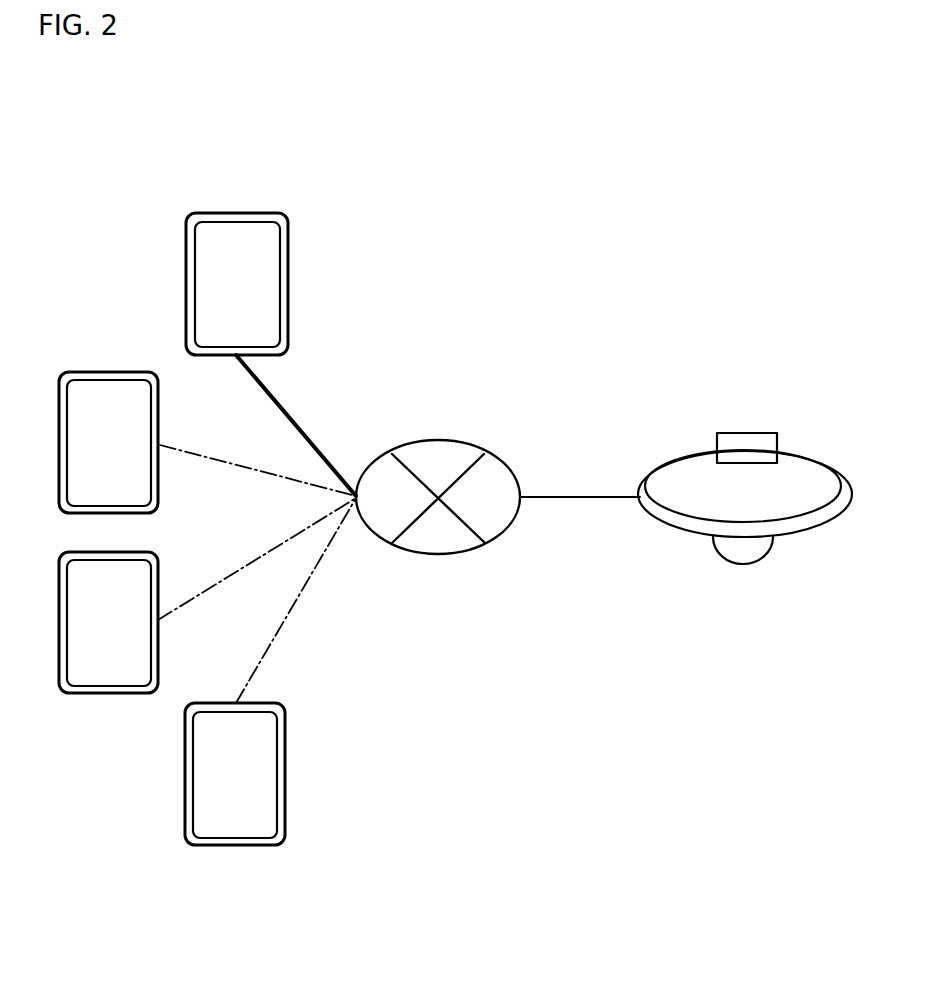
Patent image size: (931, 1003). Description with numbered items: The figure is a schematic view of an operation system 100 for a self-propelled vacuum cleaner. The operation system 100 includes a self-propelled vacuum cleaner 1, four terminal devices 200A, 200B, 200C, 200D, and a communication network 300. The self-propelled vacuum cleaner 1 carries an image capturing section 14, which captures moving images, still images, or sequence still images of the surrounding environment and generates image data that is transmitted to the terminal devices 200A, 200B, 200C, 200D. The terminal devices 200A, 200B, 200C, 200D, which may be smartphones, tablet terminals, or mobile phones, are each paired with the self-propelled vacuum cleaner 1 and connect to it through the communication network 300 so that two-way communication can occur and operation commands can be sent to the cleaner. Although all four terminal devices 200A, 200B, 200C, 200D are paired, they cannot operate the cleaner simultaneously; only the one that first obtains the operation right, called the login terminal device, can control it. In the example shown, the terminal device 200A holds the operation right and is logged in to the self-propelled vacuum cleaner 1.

The operation system 100 is at (594, 209).
The terminal device 200A is at (228, 213).
The terminal device 200B is at (100, 372).
The terminal device 200C is at (100, 552).
The terminal device 200D is at (285, 747).
The communication network 300 is at (466, 441).
The self-propelled vacuum cleaner 1 is at (818, 458).
The image capturing section 14 is at (722, 445).